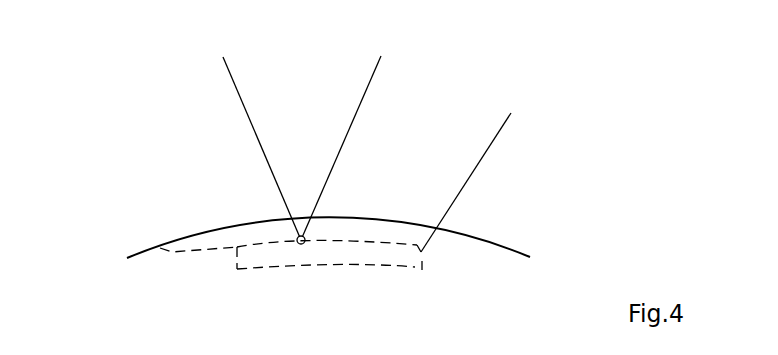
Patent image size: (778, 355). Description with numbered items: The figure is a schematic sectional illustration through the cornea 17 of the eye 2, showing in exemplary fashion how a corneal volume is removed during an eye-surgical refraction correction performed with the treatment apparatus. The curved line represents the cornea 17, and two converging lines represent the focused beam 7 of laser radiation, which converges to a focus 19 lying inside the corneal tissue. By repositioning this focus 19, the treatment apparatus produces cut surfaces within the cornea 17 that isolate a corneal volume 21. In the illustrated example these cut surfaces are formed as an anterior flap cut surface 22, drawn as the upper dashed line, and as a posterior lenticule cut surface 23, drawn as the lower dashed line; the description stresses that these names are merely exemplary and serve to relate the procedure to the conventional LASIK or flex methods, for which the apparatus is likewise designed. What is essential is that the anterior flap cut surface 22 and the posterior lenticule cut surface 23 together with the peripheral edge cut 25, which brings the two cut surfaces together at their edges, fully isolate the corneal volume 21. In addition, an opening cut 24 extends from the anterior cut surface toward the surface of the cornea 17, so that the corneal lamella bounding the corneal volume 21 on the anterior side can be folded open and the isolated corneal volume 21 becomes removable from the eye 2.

The eye 2 is at (176, 162).
The focused beam 7 is at (360, 108).
The cornea 17 is at (468, 233).
The focus 19 is at (300, 244).
The corneal volume 21 is at (412, 260).
The anterior flap cut surface 22 is at (367, 240).
The posterior lenticule cut surface 23 is at (345, 264).
The opening cut 24 is at (202, 253).
The peripheral edge cut 25 is at (490, 177).